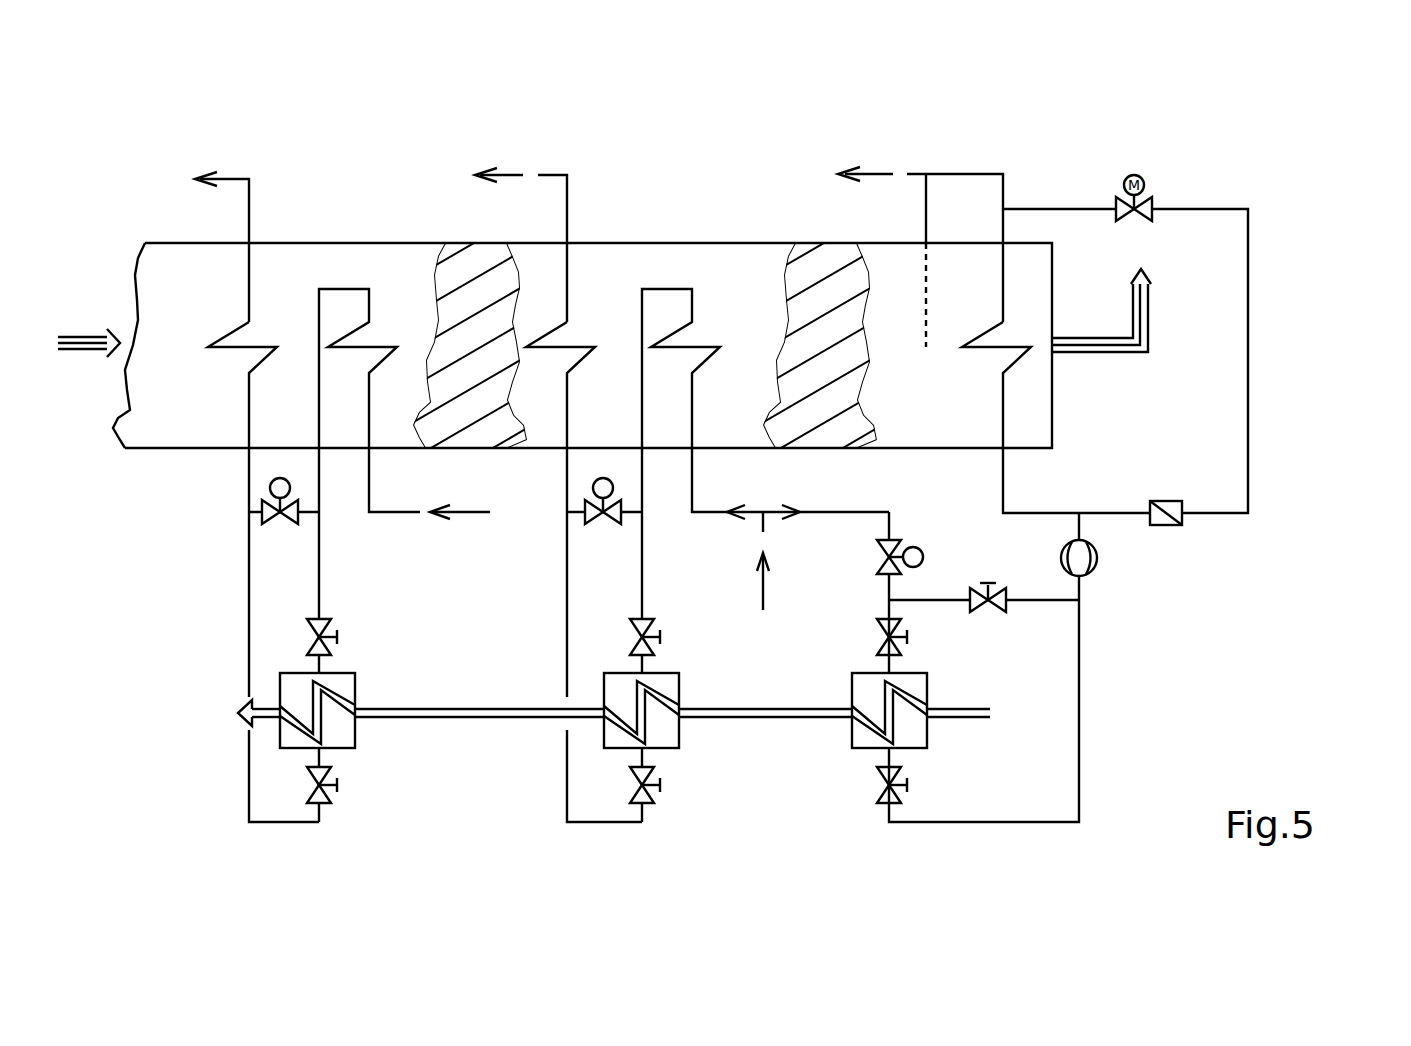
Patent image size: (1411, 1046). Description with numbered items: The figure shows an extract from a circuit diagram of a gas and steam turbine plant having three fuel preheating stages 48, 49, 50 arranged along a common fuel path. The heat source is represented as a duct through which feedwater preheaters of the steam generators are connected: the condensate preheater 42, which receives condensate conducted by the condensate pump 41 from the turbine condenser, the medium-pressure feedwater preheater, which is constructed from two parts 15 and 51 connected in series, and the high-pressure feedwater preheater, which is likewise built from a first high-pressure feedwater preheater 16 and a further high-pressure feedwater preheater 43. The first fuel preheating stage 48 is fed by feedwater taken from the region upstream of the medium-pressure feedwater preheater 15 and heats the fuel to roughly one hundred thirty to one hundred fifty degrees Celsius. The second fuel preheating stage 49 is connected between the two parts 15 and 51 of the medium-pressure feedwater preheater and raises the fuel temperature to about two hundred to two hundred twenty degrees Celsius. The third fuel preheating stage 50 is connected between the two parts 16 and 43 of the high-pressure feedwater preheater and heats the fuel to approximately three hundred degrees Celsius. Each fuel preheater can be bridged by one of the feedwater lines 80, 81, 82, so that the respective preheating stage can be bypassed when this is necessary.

The medium-pressure feedwater preheater 15 is at (692, 300).
The high-pressure feedwater preheater 16 is at (369, 296).
The condensate pump 41 is at (1272, 513).
The condensate preheater 42 is at (1003, 405).
The further high-pressure feedwater preheater 43 is at (251, 292).
The first fuel preheating stage 48 is at (863, 748).
The second fuel preheating stage 49 is at (679, 740).
The third fuel preheating stage 50 is at (355, 740).
The second medium-pressure feedwater preheater 51 is at (568, 297).
The feedwater line 80 is at (1043, 600).
The feedwater line 81 is at (577, 513).
The feedwater line 82 is at (250, 513).